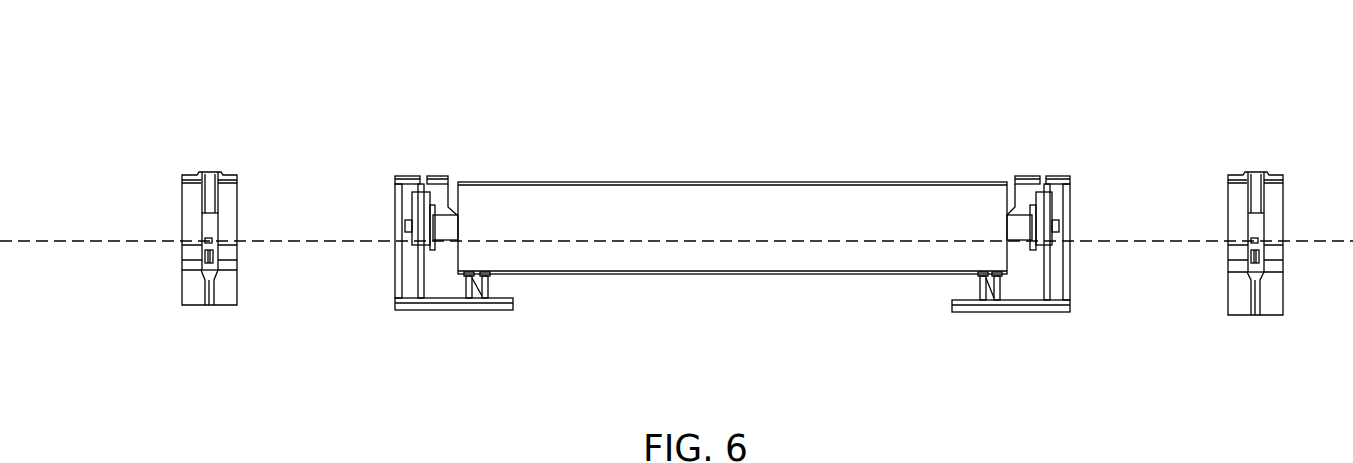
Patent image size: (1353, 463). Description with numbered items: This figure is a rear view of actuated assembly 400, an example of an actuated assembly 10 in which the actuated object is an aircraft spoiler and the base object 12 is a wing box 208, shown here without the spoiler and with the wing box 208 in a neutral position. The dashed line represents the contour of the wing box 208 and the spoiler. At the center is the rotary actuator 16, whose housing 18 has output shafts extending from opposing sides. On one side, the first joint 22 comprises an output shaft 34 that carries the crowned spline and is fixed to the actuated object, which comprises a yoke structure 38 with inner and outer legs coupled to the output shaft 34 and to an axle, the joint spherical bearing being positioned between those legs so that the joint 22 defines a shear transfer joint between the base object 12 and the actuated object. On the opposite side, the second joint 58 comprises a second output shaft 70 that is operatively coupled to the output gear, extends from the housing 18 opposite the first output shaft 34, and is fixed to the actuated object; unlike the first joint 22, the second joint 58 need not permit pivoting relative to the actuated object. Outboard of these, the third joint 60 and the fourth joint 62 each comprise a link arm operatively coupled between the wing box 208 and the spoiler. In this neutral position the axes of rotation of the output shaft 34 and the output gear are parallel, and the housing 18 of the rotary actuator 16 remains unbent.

The actuated assembly 10 is at (1189, 52).
The actuated assembly 400 is at (792, 217).
The base object 12 is at (157, 248).
The wing box 208 is at (181, 217).
The third joint 60 is at (208, 326).
The fourth joint 62 is at (1257, 331).
The rotary actuator 16 is at (732, 199).
The housing 18 is at (628, 181).
The joint 22 is at (425, 250).
The output shaft 34 is at (445, 213).
The yoke structure 38 is at (413, 203).
The second joint 58 is at (1001, 250).
The second output shaft 70 is at (1018, 216).